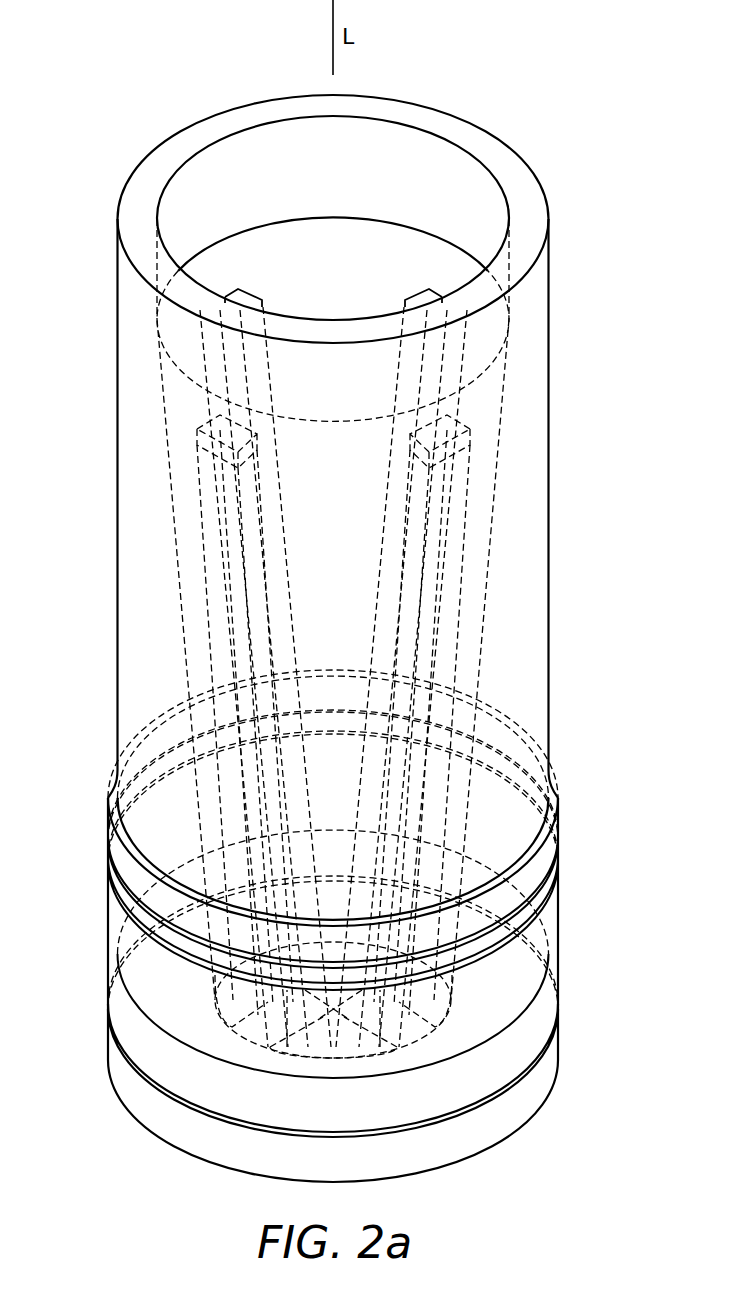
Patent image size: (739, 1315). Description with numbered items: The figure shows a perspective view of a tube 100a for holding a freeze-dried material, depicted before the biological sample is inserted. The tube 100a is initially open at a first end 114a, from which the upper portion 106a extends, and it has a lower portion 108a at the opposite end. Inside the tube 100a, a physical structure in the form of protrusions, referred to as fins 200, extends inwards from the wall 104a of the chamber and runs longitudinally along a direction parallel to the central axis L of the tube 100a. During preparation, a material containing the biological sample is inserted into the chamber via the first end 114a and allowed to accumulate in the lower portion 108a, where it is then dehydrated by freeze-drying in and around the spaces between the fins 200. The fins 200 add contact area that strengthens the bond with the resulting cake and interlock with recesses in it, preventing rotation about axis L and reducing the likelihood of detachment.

The tube 100a is at (177, 143).
The wall 104a is at (285, 272).
The first end 114a is at (440, 157).
The fins 200 is at (207, 362).
The upper portion 106a is at (619, 156).
The lower portion 108a is at (619, 632).